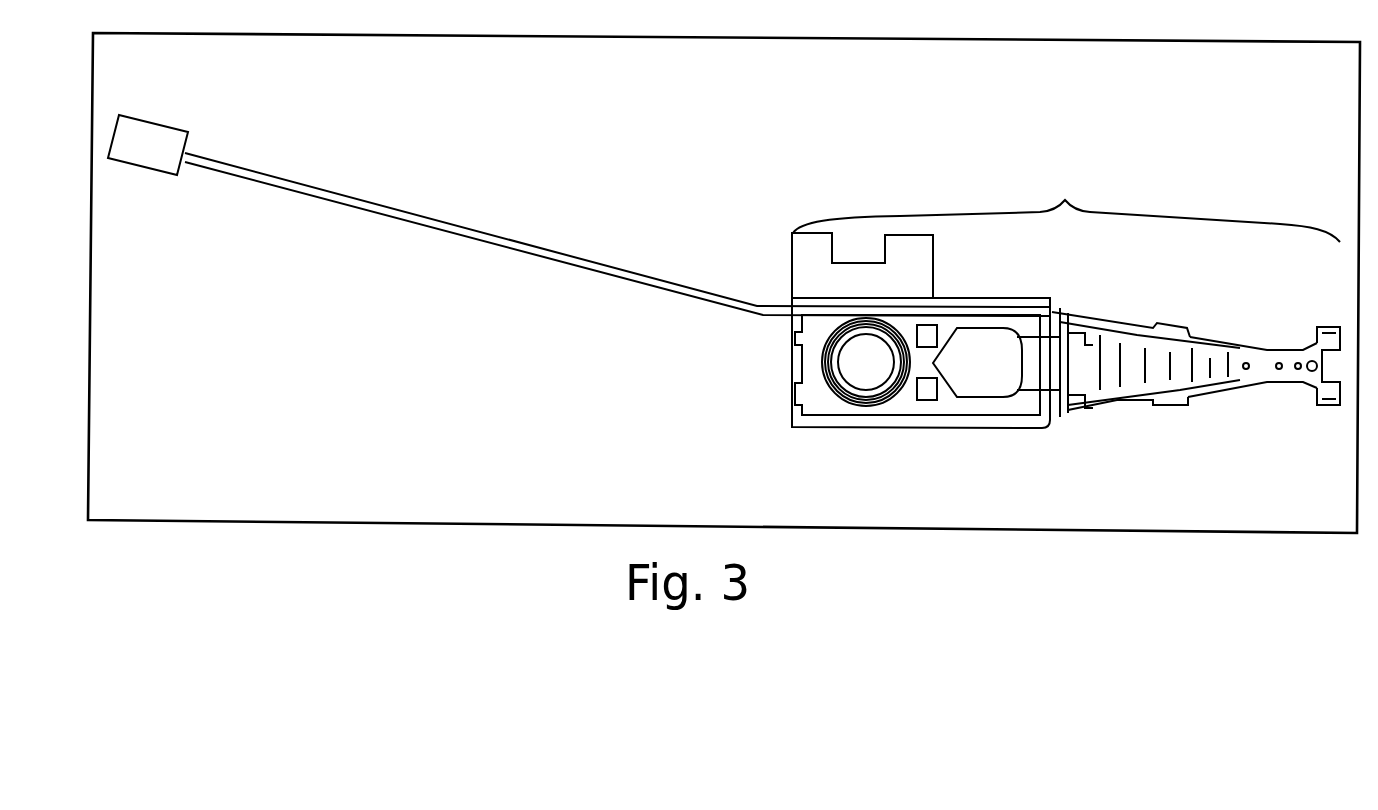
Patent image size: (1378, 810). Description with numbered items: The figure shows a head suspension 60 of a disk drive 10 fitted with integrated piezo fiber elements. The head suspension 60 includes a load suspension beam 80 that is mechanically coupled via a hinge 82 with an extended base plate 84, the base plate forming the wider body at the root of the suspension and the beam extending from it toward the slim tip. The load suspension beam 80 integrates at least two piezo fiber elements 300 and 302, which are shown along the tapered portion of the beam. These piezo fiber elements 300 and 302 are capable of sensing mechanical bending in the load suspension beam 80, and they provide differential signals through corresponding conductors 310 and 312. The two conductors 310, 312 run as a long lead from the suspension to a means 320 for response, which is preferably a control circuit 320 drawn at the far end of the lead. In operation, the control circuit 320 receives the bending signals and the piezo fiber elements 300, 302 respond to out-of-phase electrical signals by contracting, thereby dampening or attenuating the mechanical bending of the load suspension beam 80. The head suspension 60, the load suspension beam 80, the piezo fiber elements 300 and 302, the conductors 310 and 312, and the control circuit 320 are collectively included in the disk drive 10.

The disk drive 10 is at (700, 85).
The head suspension 60 is at (1066, 204).
The load suspension beam 80 is at (1193, 337).
The hinge 82 is at (1060, 413).
The extended base plate 84 is at (895, 428).
The piezo fiber element 300 is at (1140, 332).
The piezo fiber element 302 is at (1115, 400).
The conductor 310 is at (497, 233).
The conductor 312 is at (585, 267).
The control circuit 320 is at (153, 122).